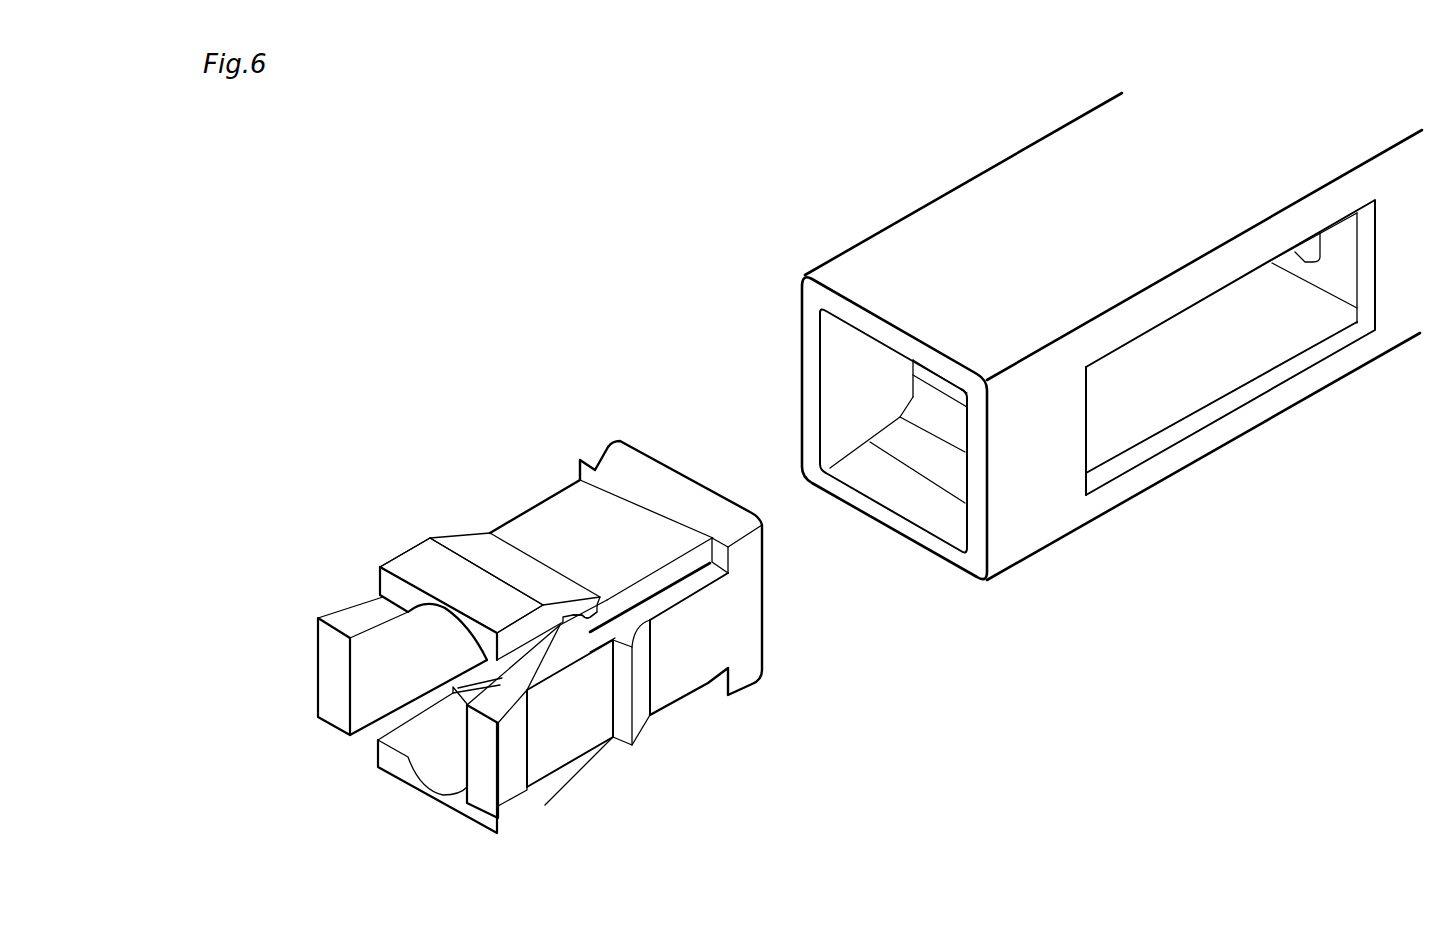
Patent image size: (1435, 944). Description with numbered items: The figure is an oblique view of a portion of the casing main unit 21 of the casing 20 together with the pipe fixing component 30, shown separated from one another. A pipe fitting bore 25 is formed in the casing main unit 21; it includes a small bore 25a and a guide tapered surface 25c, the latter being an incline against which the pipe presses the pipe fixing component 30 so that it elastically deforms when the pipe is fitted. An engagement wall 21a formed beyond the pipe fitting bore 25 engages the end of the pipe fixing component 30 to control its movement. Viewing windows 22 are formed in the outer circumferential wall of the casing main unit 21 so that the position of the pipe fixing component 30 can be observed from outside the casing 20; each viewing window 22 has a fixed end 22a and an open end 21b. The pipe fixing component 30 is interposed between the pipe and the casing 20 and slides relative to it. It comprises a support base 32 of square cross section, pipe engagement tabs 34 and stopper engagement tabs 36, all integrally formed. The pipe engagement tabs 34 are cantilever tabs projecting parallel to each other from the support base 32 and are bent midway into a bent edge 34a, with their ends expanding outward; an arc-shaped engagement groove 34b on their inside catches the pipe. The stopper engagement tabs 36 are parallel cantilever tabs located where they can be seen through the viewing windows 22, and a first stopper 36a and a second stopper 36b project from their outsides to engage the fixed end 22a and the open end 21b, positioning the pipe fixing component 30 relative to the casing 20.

The casing 20 is at (1112, 336).
The casing main unit 21 is at (923, 229).
The engagement wall 21a is at (1340, 285).
The open end 21b is at (923, 543).
The viewing window 22 is at (1185, 433).
The fixed end 22a is at (1086, 454).
The pipe fitting bore 25 is at (1207, 378).
The small bore 25a is at (1267, 362).
The guide tapered surface 25c is at (900, 500).
The pipe fixing component 30 is at (636, 398).
The support base 32 is at (683, 485).
The pipe engagement tab 34 is at (507, 557).
The bent edge 34a is at (417, 560).
The engagement groove 34b is at (593, 612).
The stopper engagement tab 36 is at (353, 610).
The first stopper 36a is at (640, 727).
The second stopper 36b is at (512, 795).